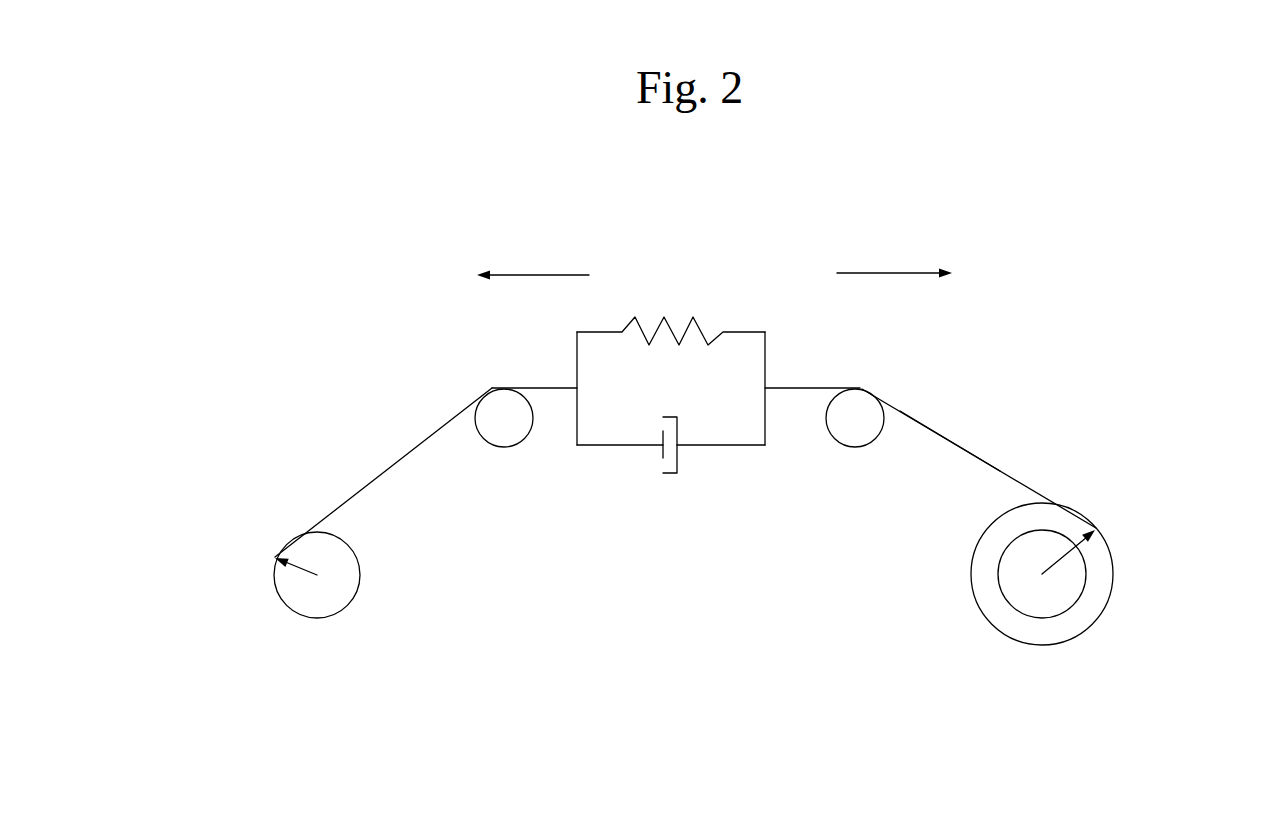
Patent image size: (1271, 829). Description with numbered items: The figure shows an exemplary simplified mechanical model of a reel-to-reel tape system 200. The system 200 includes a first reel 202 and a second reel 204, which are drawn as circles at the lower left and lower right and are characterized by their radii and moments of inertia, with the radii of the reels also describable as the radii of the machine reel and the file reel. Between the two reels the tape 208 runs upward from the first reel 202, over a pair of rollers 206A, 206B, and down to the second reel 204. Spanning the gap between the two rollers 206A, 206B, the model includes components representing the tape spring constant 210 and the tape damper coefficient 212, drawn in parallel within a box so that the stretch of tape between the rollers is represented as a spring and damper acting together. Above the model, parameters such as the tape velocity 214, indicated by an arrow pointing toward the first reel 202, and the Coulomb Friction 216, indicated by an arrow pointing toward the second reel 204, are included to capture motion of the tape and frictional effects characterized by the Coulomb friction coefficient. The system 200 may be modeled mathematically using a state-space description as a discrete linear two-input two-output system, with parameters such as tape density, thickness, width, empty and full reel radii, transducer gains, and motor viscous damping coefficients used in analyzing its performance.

The reel-to-reel tape system 200 is at (312, 356).
The reel 1 202 is at (348, 570).
The reel 2 204 is at (1020, 576).
The roller 206A is at (451, 383).
The roller 206B is at (909, 383).
The tape 208 is at (981, 416).
The tape spring constant K_T 210 is at (697, 346).
The tape damper coefficient D_T 212 is at (717, 473).
The tape velocity 214 is at (594, 236).
The Coulomb Friction 216 is at (983, 271).